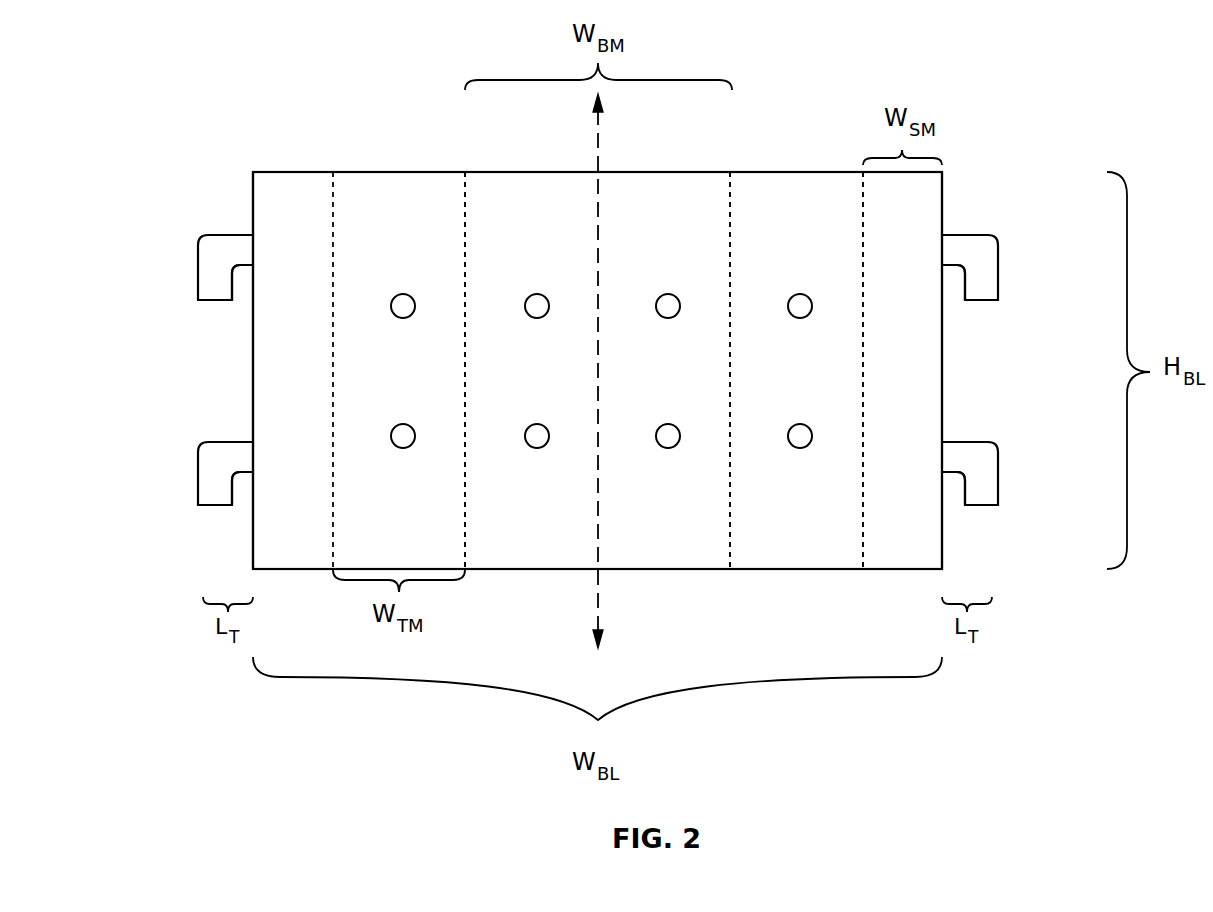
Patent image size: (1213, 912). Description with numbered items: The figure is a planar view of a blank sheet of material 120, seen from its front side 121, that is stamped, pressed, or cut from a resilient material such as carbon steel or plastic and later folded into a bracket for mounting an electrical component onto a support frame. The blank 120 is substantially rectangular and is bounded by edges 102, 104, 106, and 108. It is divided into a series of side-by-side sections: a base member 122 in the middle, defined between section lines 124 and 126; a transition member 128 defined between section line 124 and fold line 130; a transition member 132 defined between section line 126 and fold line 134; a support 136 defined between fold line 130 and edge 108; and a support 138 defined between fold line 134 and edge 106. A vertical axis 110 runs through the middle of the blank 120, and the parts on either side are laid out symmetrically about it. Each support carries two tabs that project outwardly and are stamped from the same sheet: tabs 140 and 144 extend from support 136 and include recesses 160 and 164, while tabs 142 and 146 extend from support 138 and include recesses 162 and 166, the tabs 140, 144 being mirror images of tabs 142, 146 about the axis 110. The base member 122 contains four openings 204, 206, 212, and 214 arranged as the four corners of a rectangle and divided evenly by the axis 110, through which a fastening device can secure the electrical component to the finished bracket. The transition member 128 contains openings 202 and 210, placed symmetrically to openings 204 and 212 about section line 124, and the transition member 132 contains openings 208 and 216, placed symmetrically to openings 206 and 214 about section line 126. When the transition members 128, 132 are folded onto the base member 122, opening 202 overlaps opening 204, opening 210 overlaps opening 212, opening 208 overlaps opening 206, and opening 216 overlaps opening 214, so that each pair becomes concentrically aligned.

The blank sheet of material 120 is at (197, 100).
The front side 121 is at (287, 180).
The edge 102 is at (636, 172).
The edge 104 is at (634, 570).
The edge 106 is at (943, 372).
The edge 108 is at (252, 371).
The vertical axis 110 is at (600, 617).
The base member 122 is at (597, 370).
The section line 124 is at (466, 493).
The section line 126 is at (729, 493).
The transition member 128 is at (425, 370).
The fold line 130 is at (334, 493).
The transition member 132 is at (796, 370).
The fold line 134 is at (862, 493).
The support 136 is at (304, 370).
The support 138 is at (895, 370).
The tab 140 is at (185, 255).
The tab 142 is at (1015, 254).
The tab 144 is at (185, 465).
The tab 146 is at (1015, 464).
The recess 160 is at (243, 302).
The recess 162 is at (955, 302).
The recess 164 is at (243, 507).
The recess 166 is at (955, 507).
The opening 202 is at (403, 294).
The opening 204 is at (537, 294).
The opening 206 is at (668, 294).
The opening 208 is at (800, 294).
The opening 210 is at (403, 424).
The opening 212 is at (537, 424).
The opening 214 is at (668, 424).
The opening 216 is at (800, 424).